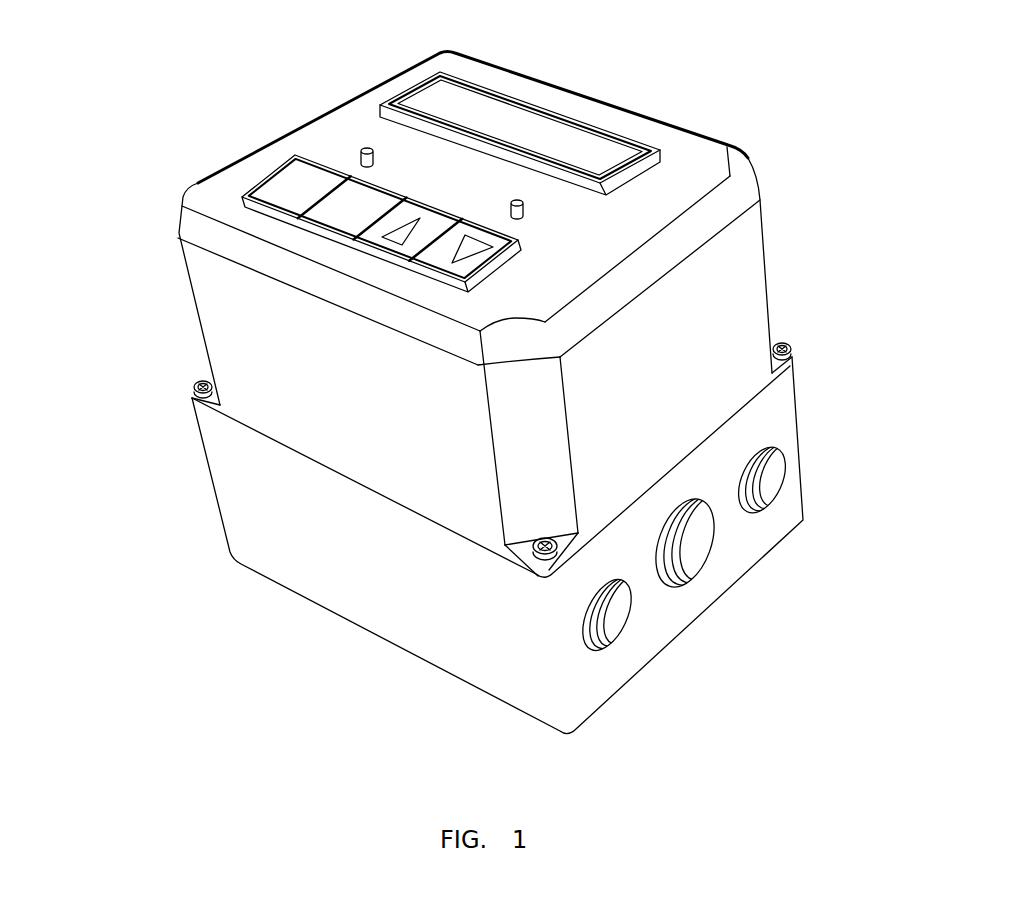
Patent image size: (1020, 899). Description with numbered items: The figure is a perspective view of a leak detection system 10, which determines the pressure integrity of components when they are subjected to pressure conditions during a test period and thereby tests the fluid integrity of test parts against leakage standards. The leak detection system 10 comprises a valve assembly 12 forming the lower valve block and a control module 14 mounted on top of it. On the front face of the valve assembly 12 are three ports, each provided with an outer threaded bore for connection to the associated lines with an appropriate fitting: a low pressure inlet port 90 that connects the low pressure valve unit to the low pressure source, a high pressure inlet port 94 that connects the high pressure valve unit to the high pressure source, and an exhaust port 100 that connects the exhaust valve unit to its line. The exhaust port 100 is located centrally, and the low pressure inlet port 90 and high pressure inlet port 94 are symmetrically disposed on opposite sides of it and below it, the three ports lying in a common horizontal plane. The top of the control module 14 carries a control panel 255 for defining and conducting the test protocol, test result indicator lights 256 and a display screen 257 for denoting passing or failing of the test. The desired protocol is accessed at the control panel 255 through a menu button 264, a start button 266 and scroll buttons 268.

The leak detection system 10 is at (155, 417).
The valve assembly 12 is at (243, 525).
The control module 14 is at (763, 227).
The low pressure inlet port 90 is at (617, 628).
The high pressure inlet port 94 is at (765, 505).
The exhaust port 100 is at (700, 548).
The control panel 255 is at (270, 176).
The test result indicator lights 256 is at (373, 158).
The display screen 257 is at (383, 100).
The menu button 264 is at (335, 217).
The start button 266 is at (258, 191).
The scroll buttons 268 is at (520, 243).